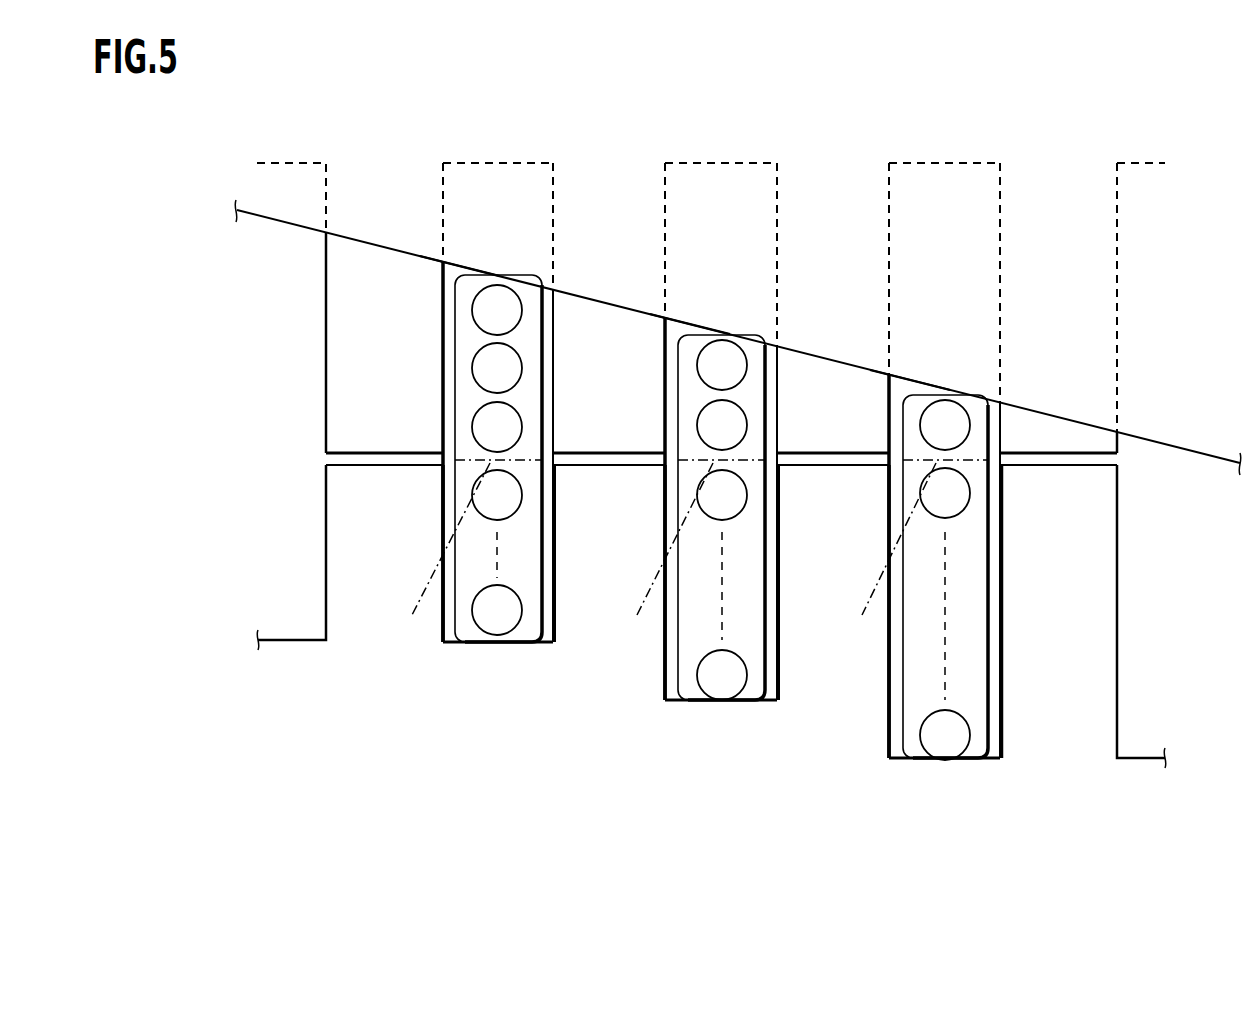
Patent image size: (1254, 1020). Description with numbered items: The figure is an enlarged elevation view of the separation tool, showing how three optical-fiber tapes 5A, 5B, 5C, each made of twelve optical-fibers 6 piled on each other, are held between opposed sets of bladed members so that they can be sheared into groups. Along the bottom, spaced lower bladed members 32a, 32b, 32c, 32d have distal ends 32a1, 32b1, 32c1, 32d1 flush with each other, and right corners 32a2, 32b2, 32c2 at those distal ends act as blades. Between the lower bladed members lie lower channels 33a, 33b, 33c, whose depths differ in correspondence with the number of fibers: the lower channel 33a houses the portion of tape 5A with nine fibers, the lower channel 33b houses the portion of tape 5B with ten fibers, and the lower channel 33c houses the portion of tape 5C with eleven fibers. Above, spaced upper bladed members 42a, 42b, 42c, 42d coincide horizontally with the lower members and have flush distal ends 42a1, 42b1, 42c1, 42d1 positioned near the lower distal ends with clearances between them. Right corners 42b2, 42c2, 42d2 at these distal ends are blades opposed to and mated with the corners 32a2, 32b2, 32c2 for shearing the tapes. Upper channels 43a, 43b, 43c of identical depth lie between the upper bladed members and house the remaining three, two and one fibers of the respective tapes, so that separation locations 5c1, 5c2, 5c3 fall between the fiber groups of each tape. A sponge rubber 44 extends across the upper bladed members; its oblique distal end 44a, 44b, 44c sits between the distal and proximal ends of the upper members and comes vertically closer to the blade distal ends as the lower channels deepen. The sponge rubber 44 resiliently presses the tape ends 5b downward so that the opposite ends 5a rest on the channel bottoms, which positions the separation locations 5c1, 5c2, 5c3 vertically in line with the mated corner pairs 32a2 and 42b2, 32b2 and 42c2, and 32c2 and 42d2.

The sponge rubber 44 is at (290, 212).
The upper bladed member 42a is at (385, 228).
The upper bladed member 42b is at (605, 228).
The upper bladed member 42c is at (828, 228).
The upper bladed member 42d is at (1062, 228).
The upper channel 43a is at (506, 163).
The upper channel 43b is at (729, 163).
The upper channel 43c is at (951, 163).
The oblique distal end of sponge rubber 44a is at (460, 258).
The oblique distal end of sponge rubber 44b is at (693, 307).
The oblique distal end of sponge rubber 44c is at (905, 380).
The distal end of upper bladed member 42a1 is at (378, 446).
The distal end of upper bladed member 42b1 is at (618, 446).
The right corner of upper bladed member 42b2 is at (566, 443).
The distal end of upper bladed member 42c1 is at (832, 444).
The right corner of upper bladed member 42c2 is at (790, 443).
The distal end of upper bladed member 42d1 is at (1065, 446).
The right corner of upper bladed member 42d2 is at (1014, 443).
The lower bladed member 32a is at (375, 632).
The distal end of lower bladed member 32a1 is at (378, 472).
The right corner of lower bladed member 32a2 is at (433, 472).
The lower bladed member 32b is at (600, 632).
The distal end of lower bladed member 32b1 is at (603, 472).
The right corner of lower bladed member 32b2 is at (658, 472).
The lower bladed member 32c is at (827, 673).
The distal end of lower bladed member 32c1 is at (828, 472).
The right corner of lower bladed member 32c2 is at (882, 472).
The lower bladed member 32d is at (1053, 730).
The distal end of lower bladed member 32d1 is at (1060, 470).
The lower channel 33a is at (452, 640).
The lower channel 33b is at (677, 698).
The lower channel 33c is at (900, 756).
The optical-fiber tape 5A is at (488, 706).
The optical-fiber tape 5B is at (712, 768).
The optical-fiber tape 5C is at (936, 826).
The end of optical-fiber tape 5a is at (527, 632).
The end of optical-fiber tape 5b is at (476, 285).
The separation location 5c1 is at (440, 556).
The separation location 5c2 is at (664, 556).
The separation location 5c3 is at (888, 556).
The optical-fiber 6 is at (498, 622).